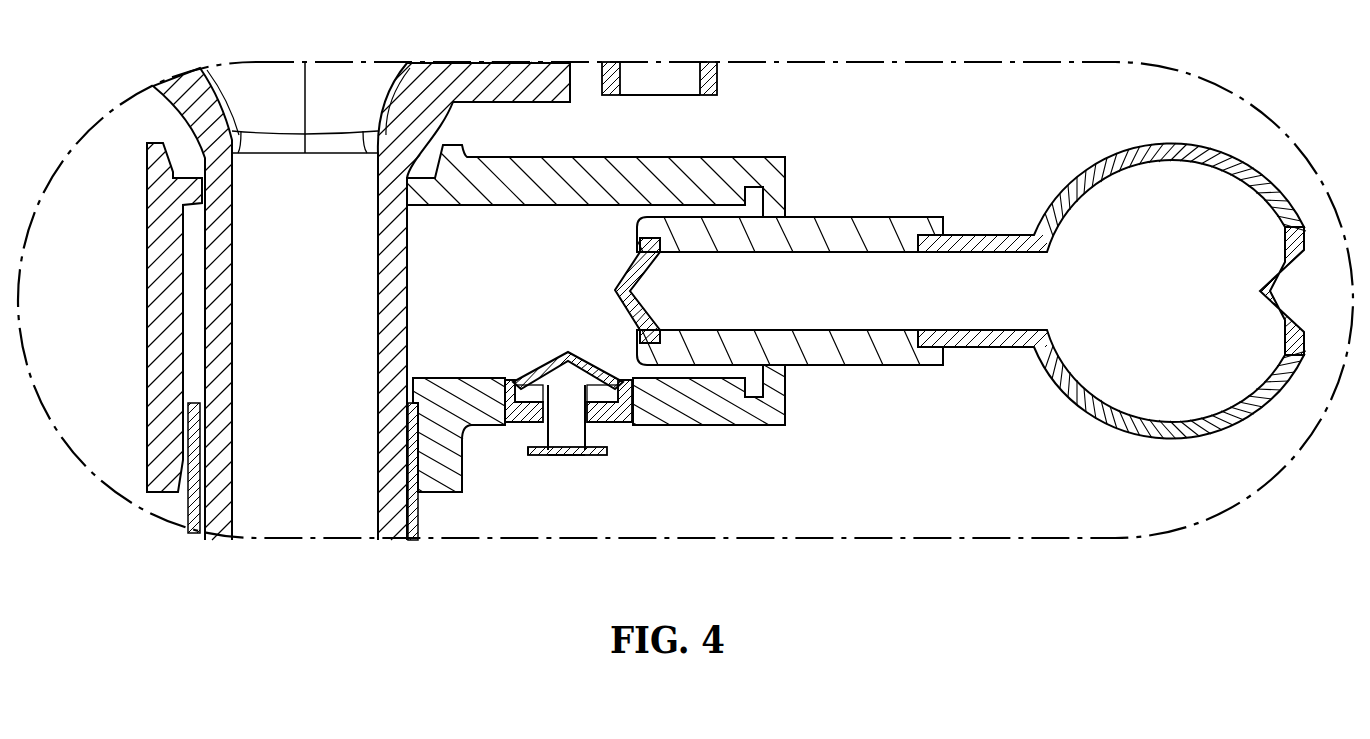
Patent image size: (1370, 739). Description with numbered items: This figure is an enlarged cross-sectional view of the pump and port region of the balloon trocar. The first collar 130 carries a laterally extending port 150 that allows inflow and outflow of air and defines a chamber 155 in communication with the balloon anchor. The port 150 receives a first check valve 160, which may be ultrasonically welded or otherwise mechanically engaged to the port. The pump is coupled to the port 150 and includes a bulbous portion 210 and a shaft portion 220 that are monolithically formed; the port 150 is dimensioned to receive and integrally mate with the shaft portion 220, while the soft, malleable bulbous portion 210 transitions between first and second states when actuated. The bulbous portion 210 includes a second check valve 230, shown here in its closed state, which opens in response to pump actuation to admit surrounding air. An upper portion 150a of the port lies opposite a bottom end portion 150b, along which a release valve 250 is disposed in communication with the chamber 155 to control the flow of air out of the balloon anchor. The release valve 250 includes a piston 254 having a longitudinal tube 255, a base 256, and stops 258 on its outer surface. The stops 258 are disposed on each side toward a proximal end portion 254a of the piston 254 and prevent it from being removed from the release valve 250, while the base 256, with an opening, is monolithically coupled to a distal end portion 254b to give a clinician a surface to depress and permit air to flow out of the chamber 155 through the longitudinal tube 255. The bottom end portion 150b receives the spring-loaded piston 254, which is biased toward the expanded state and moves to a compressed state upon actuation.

The first collar 130 is at (155, 352).
The port 150 is at (641, 255).
The upper portion of valve body 150a is at (705, 133).
The bottom end portion of the port 150b is at (697, 448).
The chamber 155 is at (530, 217).
The first check valve 160 is at (660, 250).
The bulbous portion 210 is at (1129, 332).
The shaft portion 220 is at (985, 247).
The second check valve 230 is at (1305, 243).
The release valve 250 is at (592, 443).
The piston 254 is at (600, 430).
The proximal end portion of the piston 254a is at (563, 349).
The distal end portion of the piston 254b is at (603, 459).
The longitudinal tube 255 is at (568, 452).
The base 256 is at (530, 445).
The stops 258 is at (603, 385).